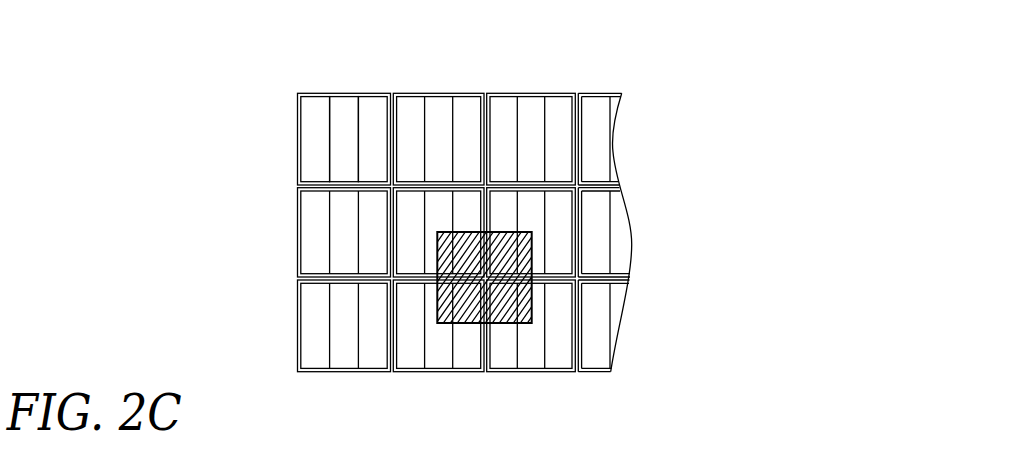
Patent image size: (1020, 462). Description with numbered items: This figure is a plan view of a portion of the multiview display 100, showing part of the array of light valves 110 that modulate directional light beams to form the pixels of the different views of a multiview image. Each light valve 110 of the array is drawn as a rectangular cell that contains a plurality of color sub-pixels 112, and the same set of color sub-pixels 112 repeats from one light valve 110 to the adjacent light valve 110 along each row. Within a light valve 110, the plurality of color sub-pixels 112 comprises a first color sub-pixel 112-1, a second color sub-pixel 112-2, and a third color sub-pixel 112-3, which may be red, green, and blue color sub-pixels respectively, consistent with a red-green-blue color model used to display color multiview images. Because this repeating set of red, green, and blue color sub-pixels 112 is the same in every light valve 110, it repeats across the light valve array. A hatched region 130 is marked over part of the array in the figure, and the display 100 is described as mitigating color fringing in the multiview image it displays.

The multiview display 100 is at (742, 44).
The light valve 110 is at (280, 142).
The color sub-pixel 112 is at (345, 96).
The first color sub-pixel 112-1 is at (316, 102).
The second color sub-pixel 112-2 is at (347, 100).
The third color sub-pixel 112-3 is at (375, 102).
The selected region 130 is at (548, 265).